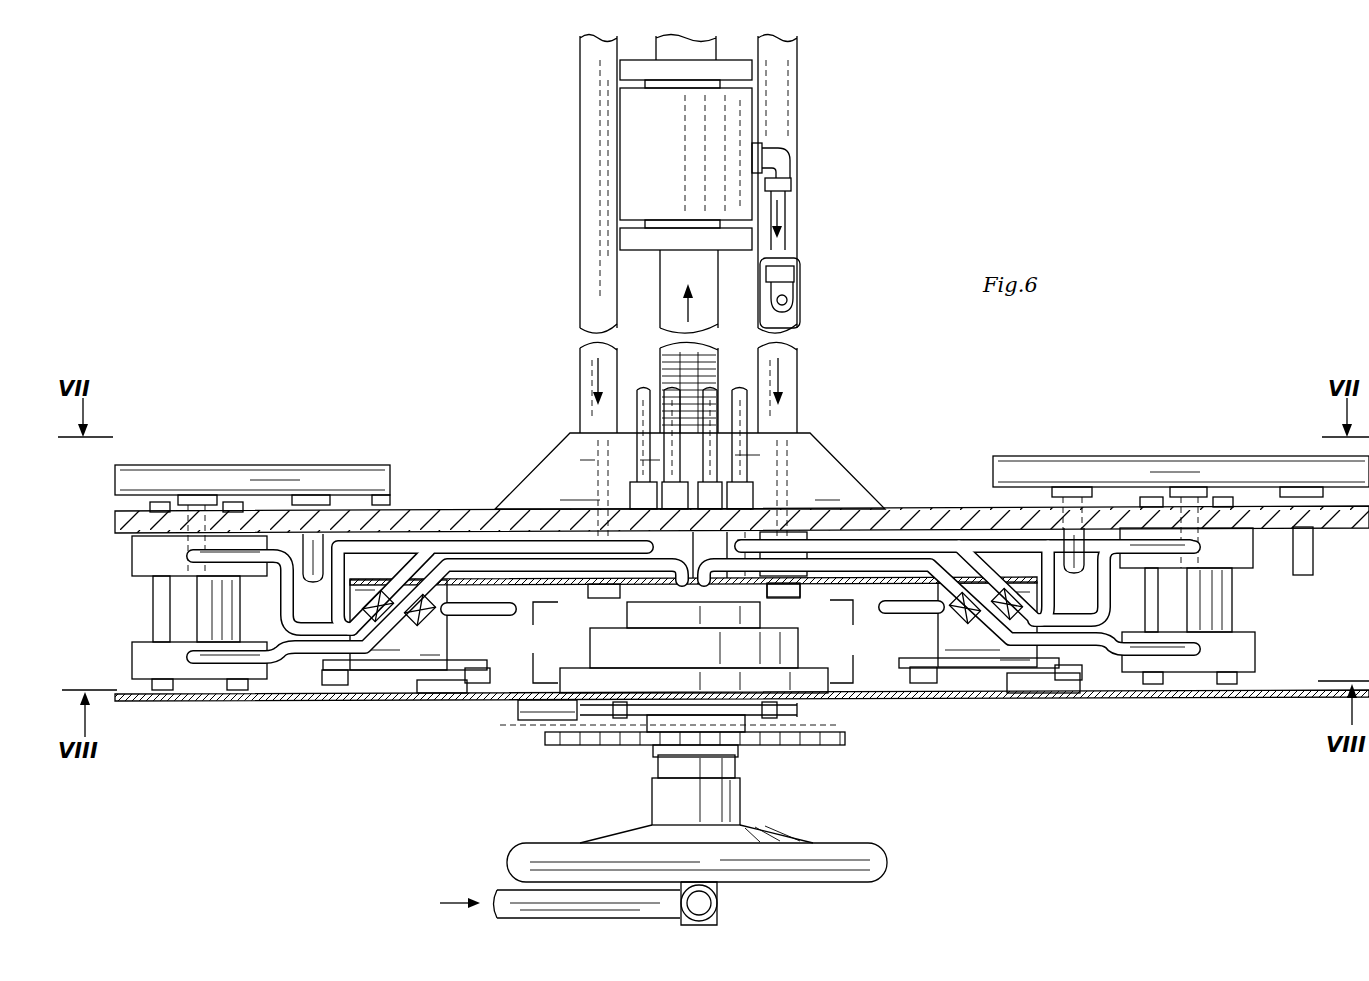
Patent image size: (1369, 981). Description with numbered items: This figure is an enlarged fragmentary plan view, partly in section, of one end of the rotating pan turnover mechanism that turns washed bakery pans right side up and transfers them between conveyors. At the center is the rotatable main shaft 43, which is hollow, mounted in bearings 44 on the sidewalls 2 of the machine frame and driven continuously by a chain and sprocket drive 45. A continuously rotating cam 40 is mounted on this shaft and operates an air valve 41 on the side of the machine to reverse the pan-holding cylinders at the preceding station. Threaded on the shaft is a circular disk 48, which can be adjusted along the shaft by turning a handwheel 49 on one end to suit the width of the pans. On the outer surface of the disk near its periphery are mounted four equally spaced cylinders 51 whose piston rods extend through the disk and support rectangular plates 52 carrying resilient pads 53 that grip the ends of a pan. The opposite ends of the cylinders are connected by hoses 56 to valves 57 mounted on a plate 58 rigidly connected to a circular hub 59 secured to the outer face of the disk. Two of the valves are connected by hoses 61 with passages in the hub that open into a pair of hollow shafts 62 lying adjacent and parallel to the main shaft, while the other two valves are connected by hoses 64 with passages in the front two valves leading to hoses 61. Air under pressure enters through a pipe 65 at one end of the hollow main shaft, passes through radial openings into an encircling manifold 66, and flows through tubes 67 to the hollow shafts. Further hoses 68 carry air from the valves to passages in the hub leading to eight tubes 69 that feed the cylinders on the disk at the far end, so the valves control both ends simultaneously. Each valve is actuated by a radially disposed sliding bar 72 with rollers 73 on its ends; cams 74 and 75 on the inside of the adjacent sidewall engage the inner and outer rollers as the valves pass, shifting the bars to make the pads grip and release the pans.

The sidewall 2 is at (1128, 700).
The cam 40 is at (800, 711).
The air valve 41 is at (527, 720).
The rotatable shaft 43 is at (662, 276).
The bearing 44 is at (706, 660).
The chain and sprocket drive 45 is at (507, 745).
The circular disk 48 is at (485, 522).
The handwheel 49 is at (858, 852).
The cylinder 51 is at (178, 604).
The rectangular plate 52 is at (390, 491).
The resilient pad 53 is at (270, 468).
The hose 56 is at (282, 650).
The valve 57 is at (447, 632).
The plate 58 is at (820, 585).
The circular hub 59 is at (745, 545).
The hose 61 is at (332, 600).
The hollow shaft 62 is at (590, 350).
The hose 64 is at (490, 614).
The pipe 65 is at (500, 892).
The manifold 66 is at (698, 163).
The tube 67 is at (618, 149).
The hose 68 is at (440, 583).
The tube 69 is at (657, 385).
The sliding bar 72 is at (325, 666).
The roller 73 is at (333, 688).
The cam 74 is at (432, 692).
The cam 75 is at (1027, 692).